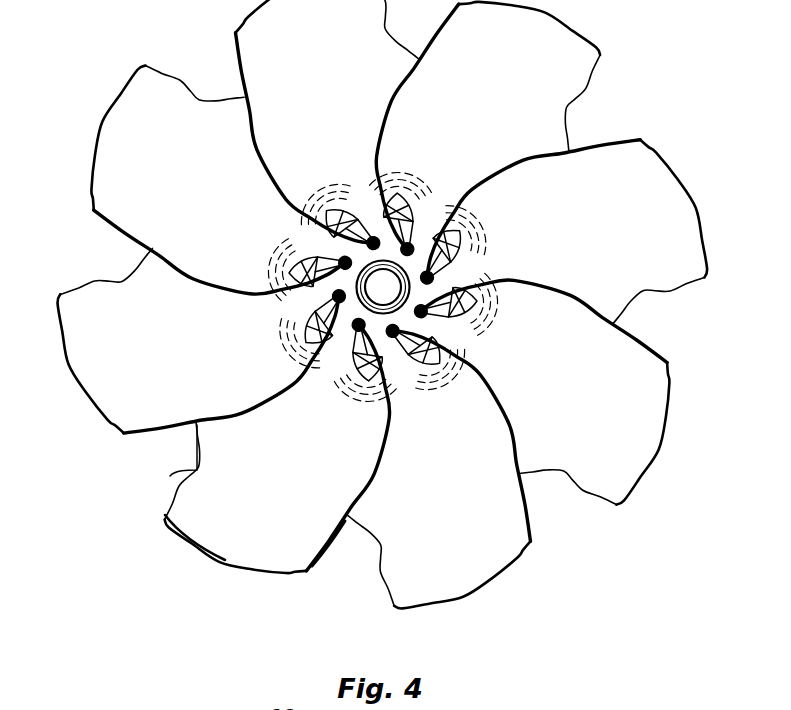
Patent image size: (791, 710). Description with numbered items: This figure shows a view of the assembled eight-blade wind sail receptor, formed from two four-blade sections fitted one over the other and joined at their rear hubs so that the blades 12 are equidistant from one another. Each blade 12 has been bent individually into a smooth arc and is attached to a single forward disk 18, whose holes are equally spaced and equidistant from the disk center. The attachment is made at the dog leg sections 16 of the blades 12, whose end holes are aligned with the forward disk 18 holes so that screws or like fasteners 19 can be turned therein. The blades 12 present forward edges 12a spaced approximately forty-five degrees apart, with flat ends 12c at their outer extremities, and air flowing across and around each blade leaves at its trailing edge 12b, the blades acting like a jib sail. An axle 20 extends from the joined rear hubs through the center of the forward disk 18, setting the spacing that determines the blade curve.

The blade 12 is at (315, 111).
The forward edge 12a is at (320, 556).
The trailing edge 12b is at (175, 474).
The flat end 12c is at (216, 556).
The dog leg section 16 is at (436, 274).
The forward disk 18 is at (342, 265).
The fastener 19 is at (414, 200).
The axle 20 is at (392, 283).